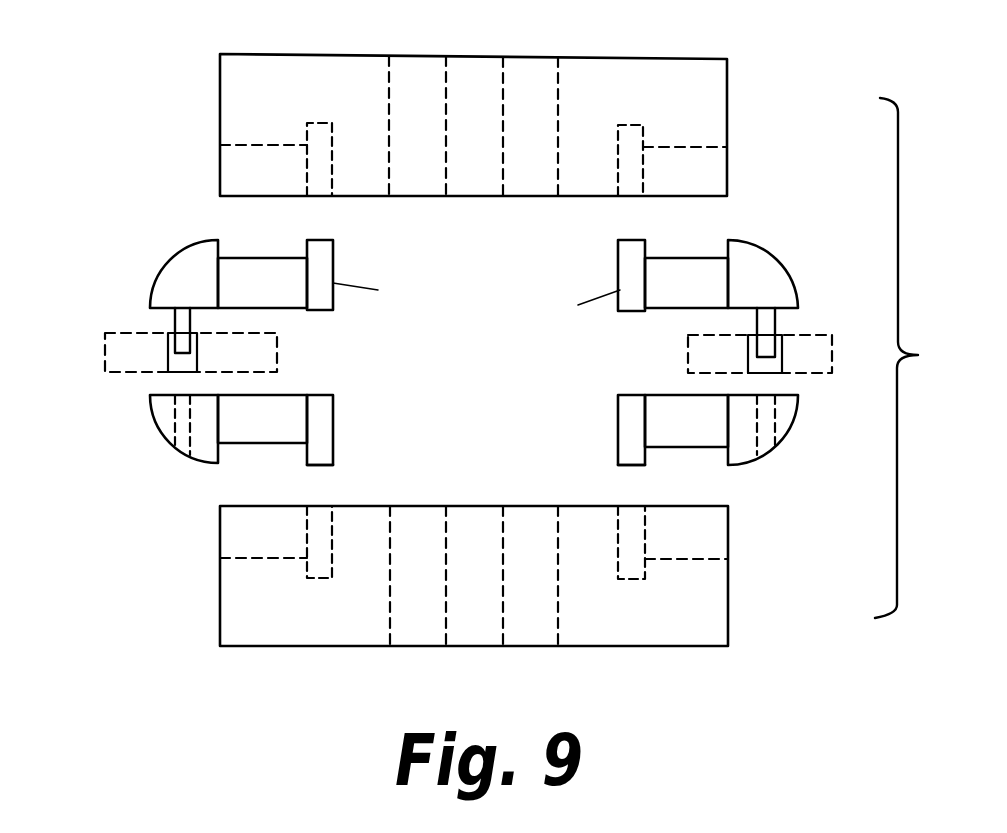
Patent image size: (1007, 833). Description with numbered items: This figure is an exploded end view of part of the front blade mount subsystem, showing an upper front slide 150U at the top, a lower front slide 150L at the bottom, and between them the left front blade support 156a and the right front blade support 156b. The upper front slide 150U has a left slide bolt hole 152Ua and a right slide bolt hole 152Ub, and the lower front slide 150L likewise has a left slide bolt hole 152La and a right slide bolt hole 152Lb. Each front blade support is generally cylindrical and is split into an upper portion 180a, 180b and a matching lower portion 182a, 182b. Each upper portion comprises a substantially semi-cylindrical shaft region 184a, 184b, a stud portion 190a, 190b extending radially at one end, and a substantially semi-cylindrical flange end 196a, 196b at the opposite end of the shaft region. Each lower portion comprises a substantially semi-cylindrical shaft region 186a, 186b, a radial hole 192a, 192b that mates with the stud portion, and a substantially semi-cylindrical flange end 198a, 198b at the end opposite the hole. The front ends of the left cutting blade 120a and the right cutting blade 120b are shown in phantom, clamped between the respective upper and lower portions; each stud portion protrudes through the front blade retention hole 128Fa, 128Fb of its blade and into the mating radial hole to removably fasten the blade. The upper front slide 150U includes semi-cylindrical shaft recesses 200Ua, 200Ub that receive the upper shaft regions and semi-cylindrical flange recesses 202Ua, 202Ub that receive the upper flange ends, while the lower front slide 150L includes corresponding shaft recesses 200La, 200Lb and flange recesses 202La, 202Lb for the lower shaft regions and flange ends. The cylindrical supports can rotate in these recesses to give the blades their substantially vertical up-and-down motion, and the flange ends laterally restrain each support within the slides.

The upper front slide 150U is at (713, 60).
The lower front slide 150L is at (691, 648).
The right slide bolt hole 152Ub is at (446, 55).
The left slide bolt hole 152Ua is at (553, 55).
The right slide bolt hole 152Lb is at (393, 590).
The left slide bolt hole 152La is at (552, 615).
The shaft recess 200Ub is at (270, 140).
The shaft recess 200Ua is at (700, 145).
The shaft recess 200Lb is at (278, 558).
The shaft recess 200La is at (713, 560).
The flange recess 202Ub is at (340, 172).
The flange recess 202Ua is at (620, 170).
The flange recess 202Lb is at (308, 533).
The flange recess 202La is at (623, 557).
The right front blade support 156b is at (152, 264).
The left front blade support 156a is at (785, 263).
The shaft region 184b is at (278, 257).
The shaft region 184a is at (698, 257).
The shaft region 186b is at (265, 443).
The shaft region 186a is at (692, 447).
The flange end 196b is at (333, 242).
The flange end 196a is at (618, 243).
The upper portion 180b is at (393, 289).
The upper portion 180a is at (570, 302).
The lower portion 182b is at (333, 412).
The lower portion 182a is at (620, 417).
The flange end 198b is at (330, 467).
The flange end 198a is at (620, 472).
The stud portion 190b is at (180, 318).
The stud portion 190a is at (767, 325).
The radial hole 192b is at (177, 435).
The radial hole 192a is at (770, 455).
The right cutting blade 120b is at (137, 368).
The left cutting blade 120a is at (695, 352).
The front blade retention hole 128Fb is at (167, 362).
The front blade retention hole 128Fa is at (783, 353).